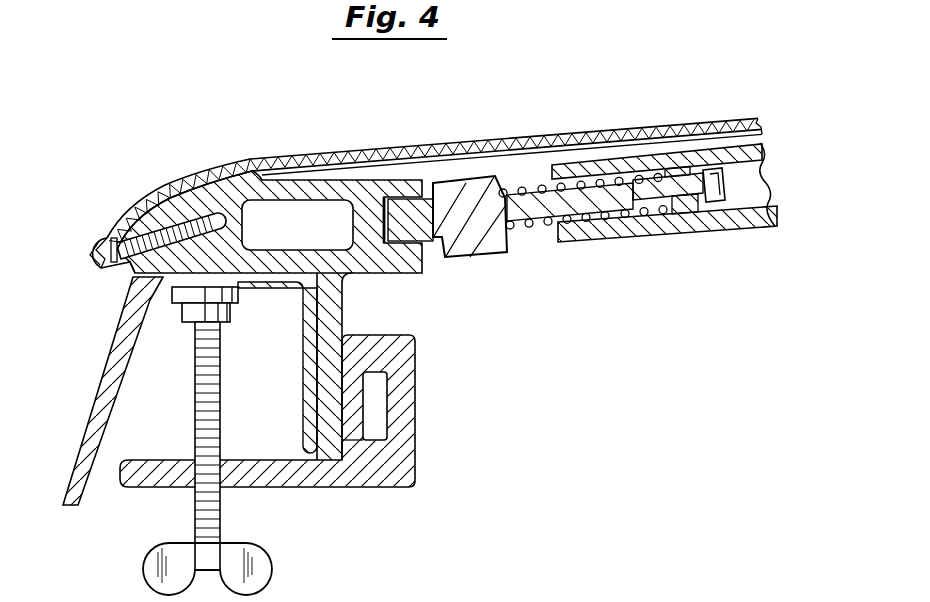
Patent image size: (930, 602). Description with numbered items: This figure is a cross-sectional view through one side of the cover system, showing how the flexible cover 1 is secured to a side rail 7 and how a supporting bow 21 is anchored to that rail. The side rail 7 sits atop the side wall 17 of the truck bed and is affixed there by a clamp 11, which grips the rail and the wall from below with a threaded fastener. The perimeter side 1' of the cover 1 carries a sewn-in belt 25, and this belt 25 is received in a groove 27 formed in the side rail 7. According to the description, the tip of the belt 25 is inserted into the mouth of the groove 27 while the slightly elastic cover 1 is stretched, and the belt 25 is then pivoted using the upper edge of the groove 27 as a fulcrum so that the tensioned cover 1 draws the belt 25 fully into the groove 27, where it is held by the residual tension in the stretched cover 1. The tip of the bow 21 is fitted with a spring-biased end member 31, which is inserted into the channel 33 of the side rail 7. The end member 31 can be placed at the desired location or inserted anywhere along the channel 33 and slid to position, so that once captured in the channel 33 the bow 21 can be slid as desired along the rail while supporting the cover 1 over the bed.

The cover 1 is at (434, 125).
The perimeter side 1' is at (84, 212).
The side rail 7 is at (293, 193).
The clamp 11 is at (413, 418).
The side wall 17 is at (283, 402).
The bow 21 is at (686, 233).
The belt 25 is at (184, 230).
The groove 27 is at (137, 313).
The end member 31 is at (404, 222).
The channel 33 is at (378, 248).